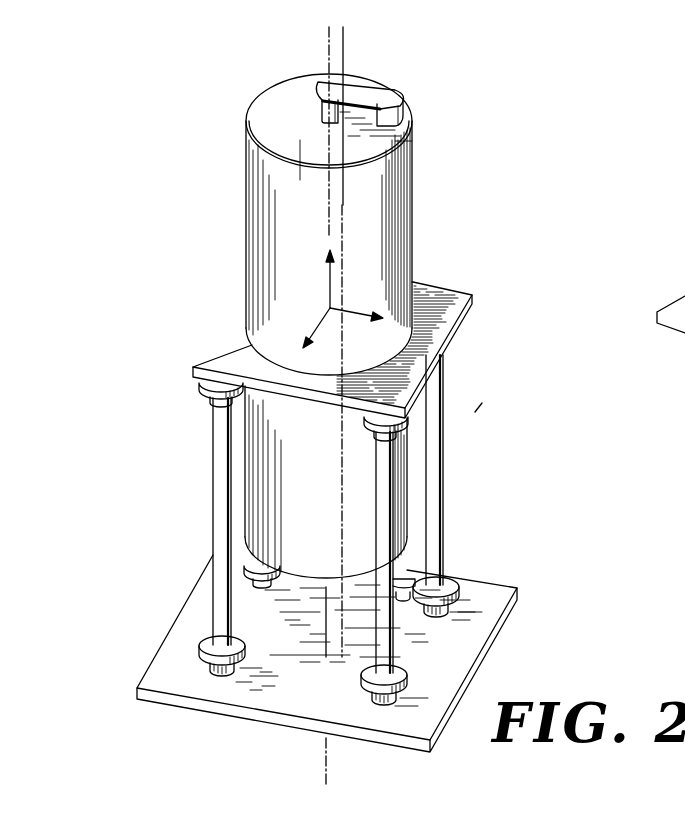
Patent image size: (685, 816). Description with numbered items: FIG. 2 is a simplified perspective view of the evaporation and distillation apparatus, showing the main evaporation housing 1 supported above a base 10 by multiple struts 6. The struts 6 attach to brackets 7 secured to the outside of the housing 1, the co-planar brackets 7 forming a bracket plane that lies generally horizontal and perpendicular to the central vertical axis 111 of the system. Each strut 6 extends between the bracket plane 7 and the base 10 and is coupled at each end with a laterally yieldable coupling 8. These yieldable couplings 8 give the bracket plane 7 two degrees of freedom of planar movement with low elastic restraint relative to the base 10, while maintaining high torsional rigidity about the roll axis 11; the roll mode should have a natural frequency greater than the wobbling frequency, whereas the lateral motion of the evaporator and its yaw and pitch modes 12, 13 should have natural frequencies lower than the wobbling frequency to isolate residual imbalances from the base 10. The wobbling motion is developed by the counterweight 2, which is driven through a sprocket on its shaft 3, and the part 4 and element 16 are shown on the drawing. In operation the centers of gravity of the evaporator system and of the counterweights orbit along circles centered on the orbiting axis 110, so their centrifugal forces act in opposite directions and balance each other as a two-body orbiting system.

The main evaporation housing 1 is at (412, 200).
The counterweight 2 is at (386, 104).
The shaft 3 is at (322, 108).
The handle bar 4 is at (357, 92).
The strut 6 is at (212, 478).
The bracket 7 is at (435, 295).
The laterally yieldable coupling 8 is at (200, 387).
The base 10 is at (181, 676).
The roll axis 11 is at (327, 270).
The yaw mode 12 is at (347, 314).
The pitch mode 13 is at (322, 319).
The spacer 16 is at (475, 412).
The orbiting axis 110 is at (338, 481).
The central vertical axis 111 is at (326, 606).